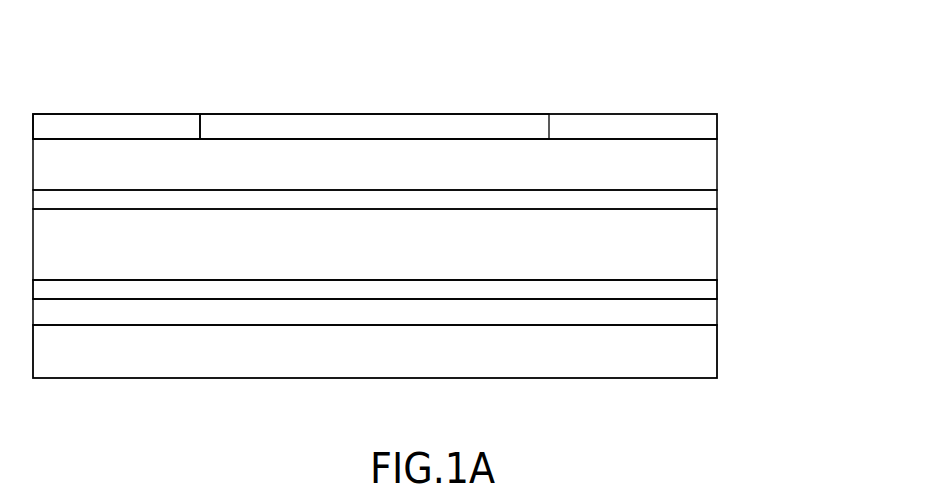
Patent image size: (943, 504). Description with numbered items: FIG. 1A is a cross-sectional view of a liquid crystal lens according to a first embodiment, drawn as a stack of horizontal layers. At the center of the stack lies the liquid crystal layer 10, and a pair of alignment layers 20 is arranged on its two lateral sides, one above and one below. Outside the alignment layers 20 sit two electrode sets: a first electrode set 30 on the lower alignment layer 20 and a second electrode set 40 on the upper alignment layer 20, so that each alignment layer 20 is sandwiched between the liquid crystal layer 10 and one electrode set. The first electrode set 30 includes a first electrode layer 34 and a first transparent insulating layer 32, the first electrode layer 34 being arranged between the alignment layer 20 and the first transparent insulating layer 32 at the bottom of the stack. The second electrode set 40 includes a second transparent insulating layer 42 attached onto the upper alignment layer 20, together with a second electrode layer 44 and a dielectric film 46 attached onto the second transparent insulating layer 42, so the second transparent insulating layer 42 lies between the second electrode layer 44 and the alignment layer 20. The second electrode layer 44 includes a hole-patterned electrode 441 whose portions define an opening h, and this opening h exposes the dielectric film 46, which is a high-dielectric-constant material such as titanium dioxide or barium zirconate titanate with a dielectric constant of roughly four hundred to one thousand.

The liquid crystal layer 10 is at (703, 247).
The alignment layers 20 is at (703, 200).
The first electrode set 30 is at (798, 308).
The first transparent insulating layer 32 is at (703, 355).
The first electrode layer 34 is at (703, 315).
The second electrode set 40 is at (482, 37).
The second transparent insulating layer 42 is at (703, 167).
The second electrode layer 44 is at (676, 136).
The hole-patterned electrode 441 is at (79, 113).
The dielectric film 46 is at (463, 127).
The opening h is at (200, 127).